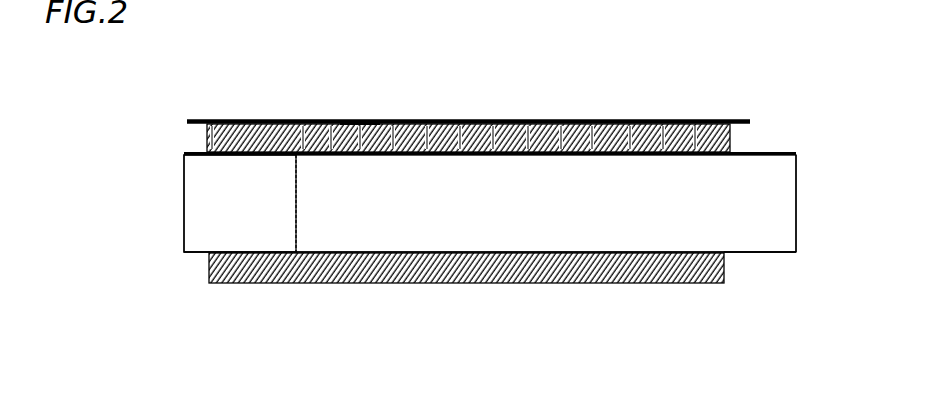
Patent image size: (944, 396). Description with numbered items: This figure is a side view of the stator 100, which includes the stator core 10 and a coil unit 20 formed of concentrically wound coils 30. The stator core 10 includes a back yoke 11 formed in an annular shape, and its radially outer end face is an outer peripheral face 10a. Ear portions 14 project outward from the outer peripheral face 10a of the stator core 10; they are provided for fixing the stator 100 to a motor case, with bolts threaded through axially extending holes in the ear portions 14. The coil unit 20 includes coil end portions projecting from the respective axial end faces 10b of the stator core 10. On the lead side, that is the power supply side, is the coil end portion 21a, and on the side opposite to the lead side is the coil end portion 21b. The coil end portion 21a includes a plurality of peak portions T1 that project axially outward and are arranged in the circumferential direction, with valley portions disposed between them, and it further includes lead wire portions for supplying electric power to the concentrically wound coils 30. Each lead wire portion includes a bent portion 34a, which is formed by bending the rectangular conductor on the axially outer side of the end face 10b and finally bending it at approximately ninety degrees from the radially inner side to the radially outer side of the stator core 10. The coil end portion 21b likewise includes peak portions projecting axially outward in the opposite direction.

The stator 100 is at (667, 92).
The stator core 10 is at (797, 200).
The outer peripheral face 10a is at (783, 233).
The axial end face 10b is at (755, 154).
The back yoke 11 is at (770, 155).
The ear portion 14 is at (197, 187).
The coil unit 20 is at (195, 118).
The coil end portion on the lead side 21a is at (207, 135).
The coil end portion on the side opposite to the lead side 21b is at (207, 268).
The concentrically wound coil 30 is at (532, 123).
The bent portion 34a is at (362, 123).
The peak portion T1 is at (375, 123).